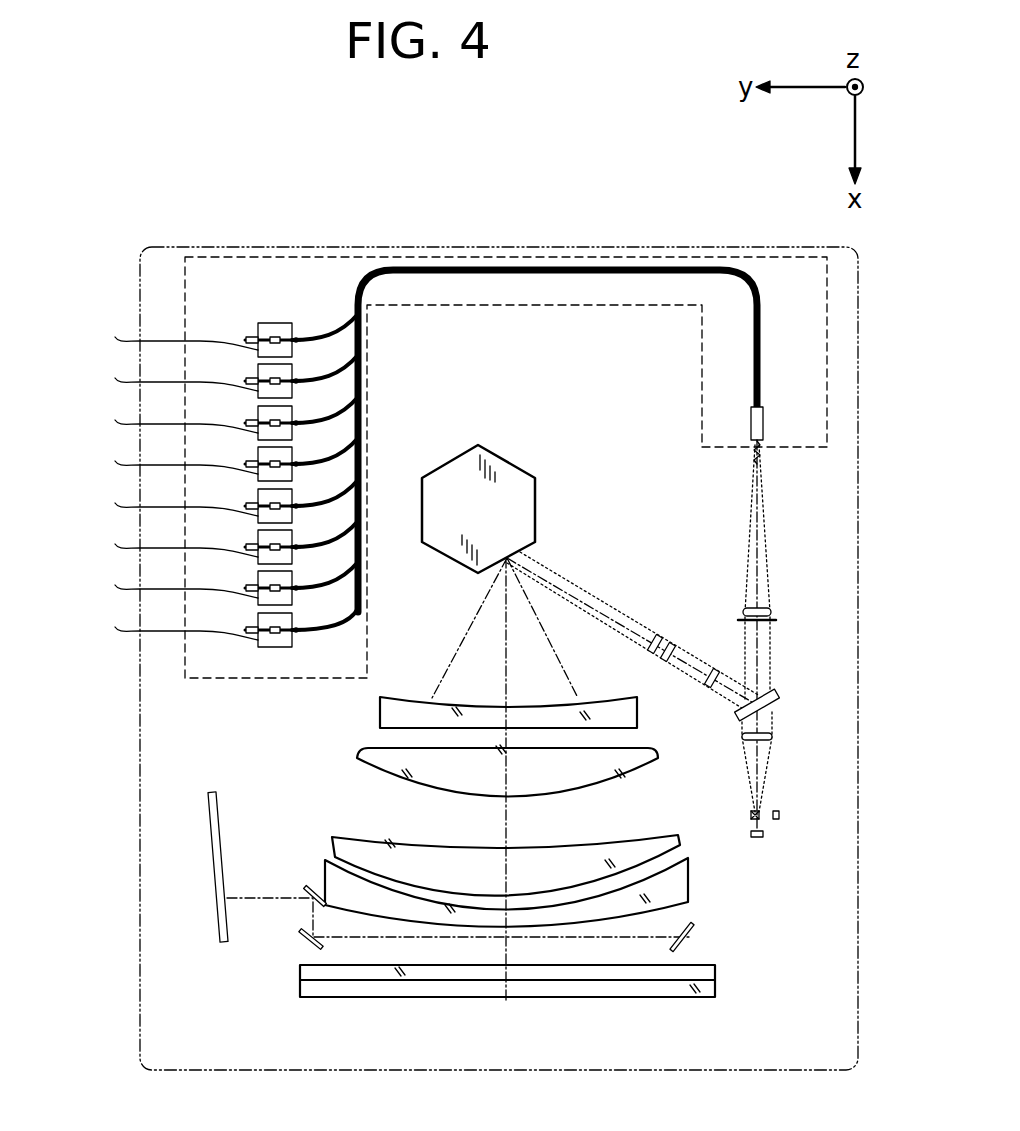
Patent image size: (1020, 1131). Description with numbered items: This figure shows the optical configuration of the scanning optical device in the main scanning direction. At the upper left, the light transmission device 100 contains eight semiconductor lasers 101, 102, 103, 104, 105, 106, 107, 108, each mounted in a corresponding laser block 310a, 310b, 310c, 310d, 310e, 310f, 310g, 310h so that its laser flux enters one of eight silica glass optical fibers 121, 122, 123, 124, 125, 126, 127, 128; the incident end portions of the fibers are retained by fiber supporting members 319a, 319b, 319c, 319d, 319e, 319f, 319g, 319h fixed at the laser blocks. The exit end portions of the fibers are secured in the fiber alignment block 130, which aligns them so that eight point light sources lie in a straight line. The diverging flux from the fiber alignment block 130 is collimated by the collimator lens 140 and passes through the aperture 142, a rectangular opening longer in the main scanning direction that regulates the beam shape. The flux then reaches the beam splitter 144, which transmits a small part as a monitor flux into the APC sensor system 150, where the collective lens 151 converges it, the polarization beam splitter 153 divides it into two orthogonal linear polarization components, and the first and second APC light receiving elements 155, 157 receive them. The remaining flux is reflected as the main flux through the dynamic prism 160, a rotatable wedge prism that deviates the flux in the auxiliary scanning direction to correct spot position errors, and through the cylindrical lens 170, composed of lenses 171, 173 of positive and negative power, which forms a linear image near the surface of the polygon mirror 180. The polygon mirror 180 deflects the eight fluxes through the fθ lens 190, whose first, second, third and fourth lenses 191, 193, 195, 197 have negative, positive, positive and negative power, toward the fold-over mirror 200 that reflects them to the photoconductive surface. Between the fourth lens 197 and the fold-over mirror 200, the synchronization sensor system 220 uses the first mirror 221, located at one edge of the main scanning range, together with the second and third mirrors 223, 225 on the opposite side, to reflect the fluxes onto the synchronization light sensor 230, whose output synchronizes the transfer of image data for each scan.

The light transmission device 100 is at (613, 306).
The semiconductor laser 101 is at (257, 630).
The semiconductor laser 102 is at (257, 588).
The semiconductor laser 103 is at (257, 547).
The semiconductor laser 104 is at (257, 506).
The semiconductor laser 105 is at (257, 464).
The semiconductor laser 106 is at (257, 423).
The semiconductor laser 107 is at (257, 381).
The semiconductor laser 108 is at (257, 340).
The optical fiber 121 is at (366, 630).
The optical fiber 122 is at (366, 588).
The optical fiber 123 is at (366, 547).
The optical fiber 124 is at (366, 506).
The optical fiber 125 is at (366, 464).
The optical fiber 126 is at (366, 423).
The optical fiber 127 is at (366, 381).
The optical fiber 128 is at (366, 340).
The fiber alignment block 130 is at (786, 420).
The collimator lens 140 is at (815, 598).
The aperture 142 is at (776, 620).
The beam splitter 144 is at (812, 690).
The APC sensor system 150 is at (828, 787).
The collective lens 151 is at (772, 735).
The polarization beam splitter 153 is at (760, 812).
The first APC light receiving element 155 is at (794, 845).
The second APC light receiving element 157 is at (807, 823).
The dynamic prism 160 is at (709, 688).
The cylindrical lens 170 is at (674, 593).
The lens 171 is at (676, 644).
The lens 173 is at (655, 635).
The polygon mirror 180 is at (500, 455).
The fθ lens 190 is at (444, 812).
The first lens 191 is at (380, 713).
The second lens 193 is at (357, 760).
The third lens 195 is at (337, 837).
The fourth lens 197 is at (480, 875).
The fold-over mirror 200 is at (305, 997).
The synchronization sensor system 220 is at (451, 954).
The first mirror 221 is at (630, 989).
The second mirror 223 is at (325, 908).
The third mirror 225 is at (323, 948).
The synchronization light sensor 230 is at (227, 925).
The laser block 310a is at (165, 619).
The laser block 310b is at (165, 577).
The laser block 310c is at (165, 536).
The laser block 310d is at (165, 495).
The laser block 310e is at (165, 453).
The laser block 310f is at (165, 412).
The laser block 310g is at (165, 370).
The laser block 310h is at (165, 329).
The fiber supporting member 319a is at (324, 622).
The fiber supporting member 319b is at (324, 580).
The fiber supporting member 319c is at (324, 539).
The fiber supporting member 319d is at (324, 498).
The fiber supporting member 319e is at (324, 456).
The fiber supporting member 319f is at (324, 415).
The fiber supporting member 319g is at (324, 373).
The fiber supporting member 319h is at (324, 332).